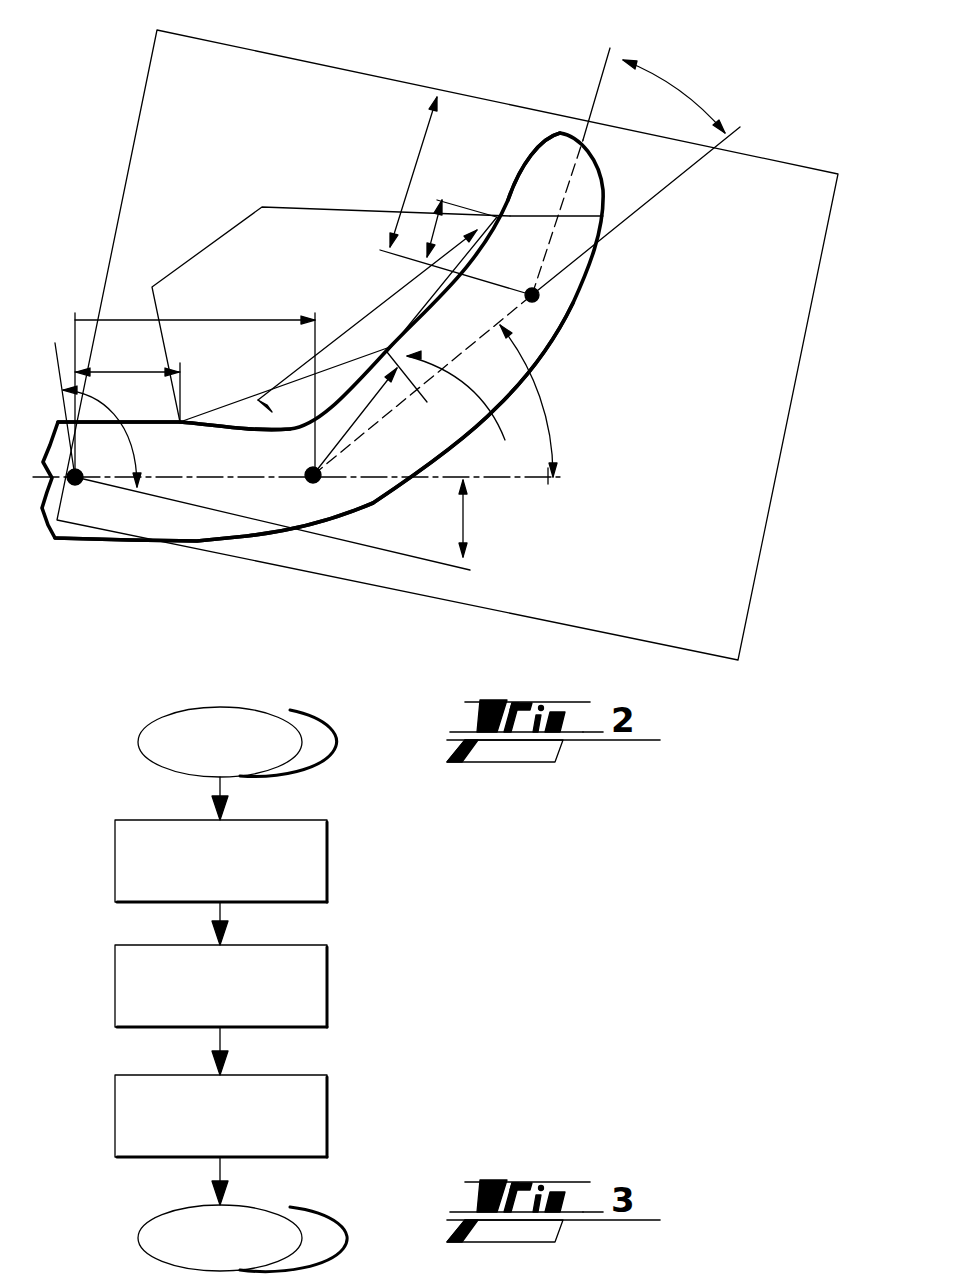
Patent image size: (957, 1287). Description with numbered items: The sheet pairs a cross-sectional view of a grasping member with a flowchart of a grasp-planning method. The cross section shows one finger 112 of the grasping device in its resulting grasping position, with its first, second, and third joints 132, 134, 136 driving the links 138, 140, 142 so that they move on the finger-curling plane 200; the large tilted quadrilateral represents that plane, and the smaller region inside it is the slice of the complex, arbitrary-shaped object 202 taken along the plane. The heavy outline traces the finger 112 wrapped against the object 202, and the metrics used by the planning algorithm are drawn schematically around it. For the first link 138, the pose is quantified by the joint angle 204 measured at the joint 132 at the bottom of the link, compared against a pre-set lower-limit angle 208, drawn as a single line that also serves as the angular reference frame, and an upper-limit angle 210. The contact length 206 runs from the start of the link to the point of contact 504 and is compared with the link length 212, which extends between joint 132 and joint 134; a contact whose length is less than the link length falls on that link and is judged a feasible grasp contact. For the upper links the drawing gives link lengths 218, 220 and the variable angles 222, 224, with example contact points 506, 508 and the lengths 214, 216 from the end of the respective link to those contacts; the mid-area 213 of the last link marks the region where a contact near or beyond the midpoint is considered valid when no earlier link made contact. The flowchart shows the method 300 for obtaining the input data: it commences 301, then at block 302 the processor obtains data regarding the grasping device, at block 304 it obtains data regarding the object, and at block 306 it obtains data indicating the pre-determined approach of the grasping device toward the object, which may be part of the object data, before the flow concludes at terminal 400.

In FIG. 2, the grasping member 112 is at (705, 225).
In FIG. 2, the first joint 132 is at (80, 483).
In FIG. 2, the second joint 134 is at (363, 493).
In FIG. 2, the third joint 136 is at (534, 298).
In FIG. 2, the first link 138 is at (215, 541).
In FIG. 2, the second link 140 is at (458, 445).
In FIG. 2, the third link 142 is at (603, 216).
In FIG. 2, the finger-curling plane 200 is at (230, 109).
In FIG. 2, the object 202 is at (295, 263).
In FIG. 2, the link angle 204 is at (466, 518).
In FIG. 2, the contact length 206 is at (118, 372).
In FIG. 2, the lower-limit angle 208 is at (180, 497).
In FIG. 2, the upper-limit angle 210 is at (137, 447).
In FIG. 2, the link length 212 is at (218, 322).
In FIG. 2, the mid-area of last link 213 is at (518, 160).
In FIG. 2, the contact offset length 214 is at (349, 412).
In FIG. 2, the contact offset length 216 is at (432, 234).
In FIG. 2, the upper link length 218 is at (377, 307).
In FIG. 2, the upper link length 220 is at (423, 160).
In FIG. 2, the upper link angle 222 is at (547, 422).
In FIG. 2, the upper link angle 224 is at (678, 80).
In FIG. 2, the point of contact 504 is at (172, 434).
In FIG. 2, the contact point 506 is at (473, 405).
In FIG. 2, the contact point 508 is at (517, 212).
In FIG. 3, the method 300 is at (213, 675).
In FIG. 3, the commencement step 301 is at (250, 759).
In FIG. 3, the grasping-device data block 302 is at (248, 879).
In FIG. 3, the object data block 304 is at (248, 1004).
In FIG. 3, the approach data block 306 is at (248, 1134).
In FIG. 3, the end step 400 is at (250, 1256).